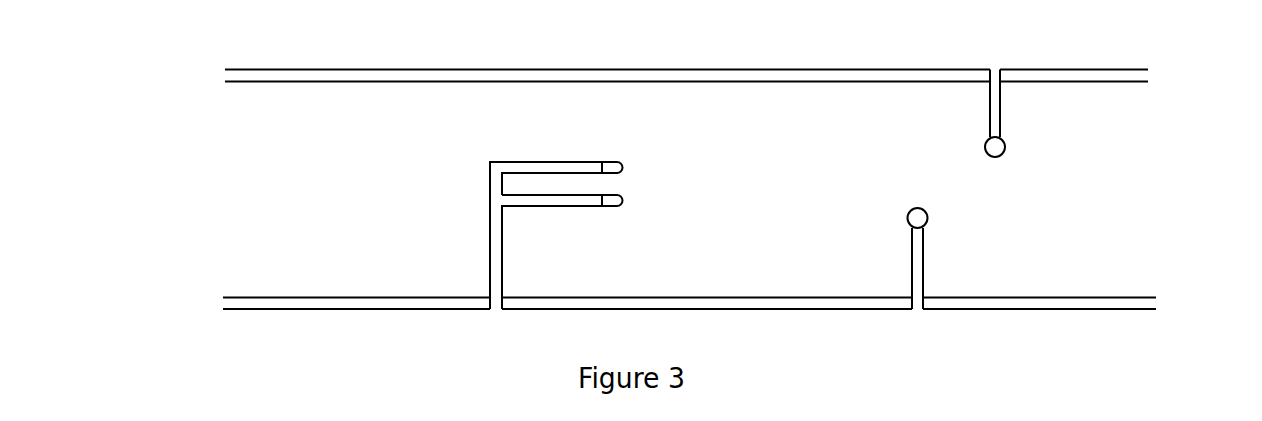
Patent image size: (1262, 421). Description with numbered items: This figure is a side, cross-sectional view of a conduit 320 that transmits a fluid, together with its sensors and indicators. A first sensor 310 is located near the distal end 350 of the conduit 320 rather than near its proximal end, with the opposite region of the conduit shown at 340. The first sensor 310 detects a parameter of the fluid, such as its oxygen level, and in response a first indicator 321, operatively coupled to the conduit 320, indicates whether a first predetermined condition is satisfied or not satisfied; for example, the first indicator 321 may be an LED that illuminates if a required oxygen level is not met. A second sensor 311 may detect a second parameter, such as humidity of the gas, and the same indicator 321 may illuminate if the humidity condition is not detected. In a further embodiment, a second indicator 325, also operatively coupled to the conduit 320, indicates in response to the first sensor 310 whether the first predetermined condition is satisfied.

The conduit 320 is at (667, 69).
The second transmission line input section 340 is at (318, 195).
The distal end 350 is at (1097, 222).
The second sensor 311 is at (1006, 148).
The first sensor 310 is at (910, 210).
The second indicator 325 is at (535, 162).
The first indicator 321 is at (553, 207).